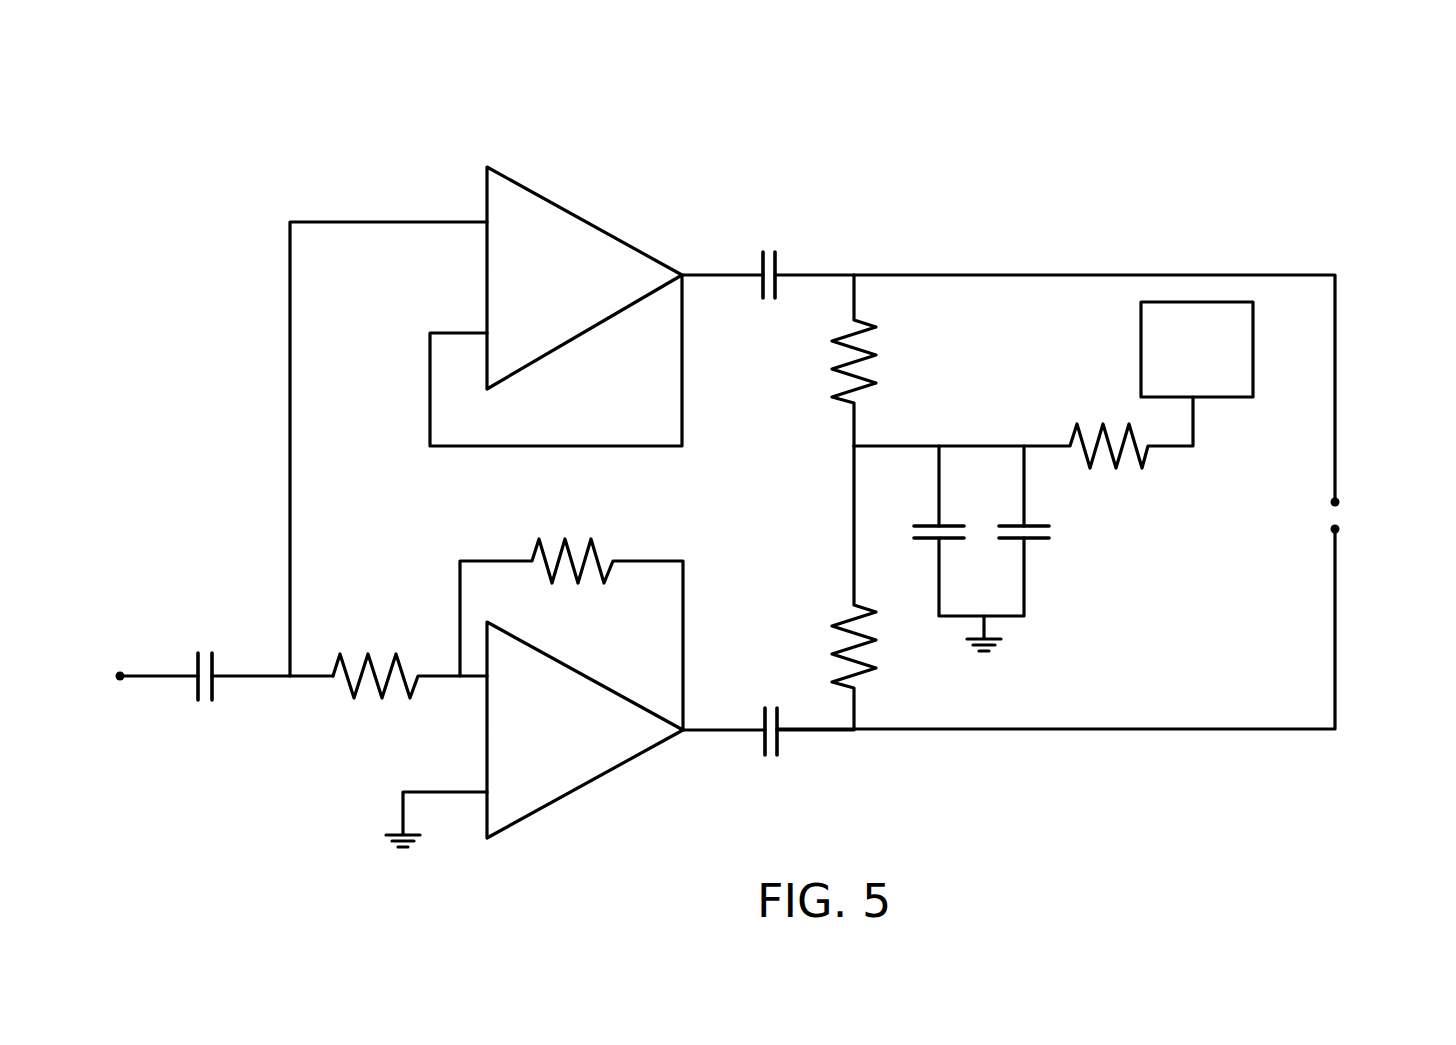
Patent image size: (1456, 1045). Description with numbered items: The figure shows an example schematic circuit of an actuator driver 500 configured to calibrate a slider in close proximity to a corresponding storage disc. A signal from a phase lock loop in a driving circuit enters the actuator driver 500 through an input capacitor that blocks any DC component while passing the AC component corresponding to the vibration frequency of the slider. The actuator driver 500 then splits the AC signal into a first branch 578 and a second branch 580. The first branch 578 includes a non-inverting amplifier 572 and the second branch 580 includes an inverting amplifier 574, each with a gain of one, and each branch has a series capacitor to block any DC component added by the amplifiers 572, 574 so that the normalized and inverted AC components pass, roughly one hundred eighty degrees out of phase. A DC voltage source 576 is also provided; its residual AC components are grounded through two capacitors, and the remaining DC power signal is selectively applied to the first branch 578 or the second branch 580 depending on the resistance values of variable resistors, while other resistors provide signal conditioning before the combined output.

The actuator driver 500 is at (260, 120).
The non-inverting amplifier 572 is at (656, 224).
The inverting amplifier 574 is at (666, 771).
The DC voltage source 576 is at (1197, 349).
The first branch 578 is at (1058, 256).
The second branch 580 is at (1036, 758).